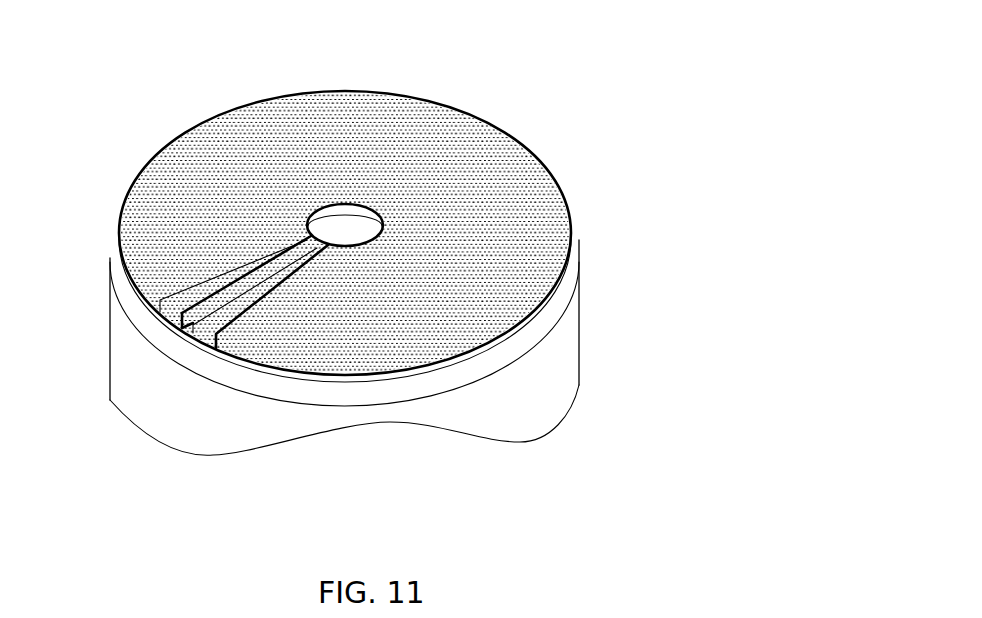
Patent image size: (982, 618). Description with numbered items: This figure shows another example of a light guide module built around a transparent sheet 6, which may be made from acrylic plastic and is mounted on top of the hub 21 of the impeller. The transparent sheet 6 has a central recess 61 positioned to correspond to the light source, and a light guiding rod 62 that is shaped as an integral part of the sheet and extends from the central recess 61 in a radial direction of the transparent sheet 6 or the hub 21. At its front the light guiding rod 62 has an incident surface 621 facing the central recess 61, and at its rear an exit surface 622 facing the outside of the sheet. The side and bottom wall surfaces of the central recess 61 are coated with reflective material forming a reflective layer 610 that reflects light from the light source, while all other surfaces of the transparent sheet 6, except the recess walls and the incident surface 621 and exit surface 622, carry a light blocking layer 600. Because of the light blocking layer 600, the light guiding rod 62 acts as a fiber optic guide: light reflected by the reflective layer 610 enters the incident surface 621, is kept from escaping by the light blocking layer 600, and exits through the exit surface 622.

The transparent sheet 6 is at (140, 157).
The light blocking layer 600 is at (508, 190).
The central recess 61 is at (365, 195).
The reflective layer 610 is at (330, 210).
The light guiding rod 62 is at (183, 300).
The incident surface 621 is at (320, 240).
The exit surface 622 is at (183, 323).
The hub 21 is at (580, 340).